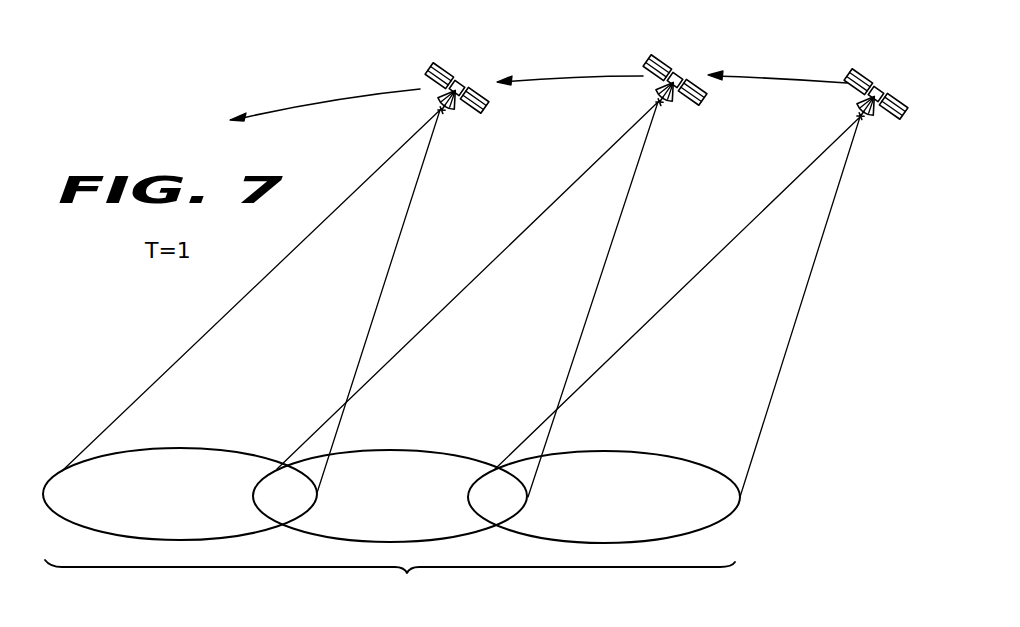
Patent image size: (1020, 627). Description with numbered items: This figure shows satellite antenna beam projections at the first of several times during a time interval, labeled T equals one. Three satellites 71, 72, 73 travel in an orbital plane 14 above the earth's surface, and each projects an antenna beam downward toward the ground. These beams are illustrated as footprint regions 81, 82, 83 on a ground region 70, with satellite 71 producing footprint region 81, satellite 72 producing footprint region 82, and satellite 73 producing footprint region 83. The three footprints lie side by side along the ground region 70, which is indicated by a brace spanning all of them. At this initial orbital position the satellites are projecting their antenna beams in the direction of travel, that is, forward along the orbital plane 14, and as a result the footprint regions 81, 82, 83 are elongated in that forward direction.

The orbital plane 14 is at (308, 105).
The ground region 70 is at (390, 585).
The satellite 71 is at (448, 63).
The satellite 72 is at (668, 55).
The satellite 73 is at (868, 66).
The footprint region 81 is at (175, 447).
The footprint region 82 is at (388, 449).
The footprint region 83 is at (600, 450).